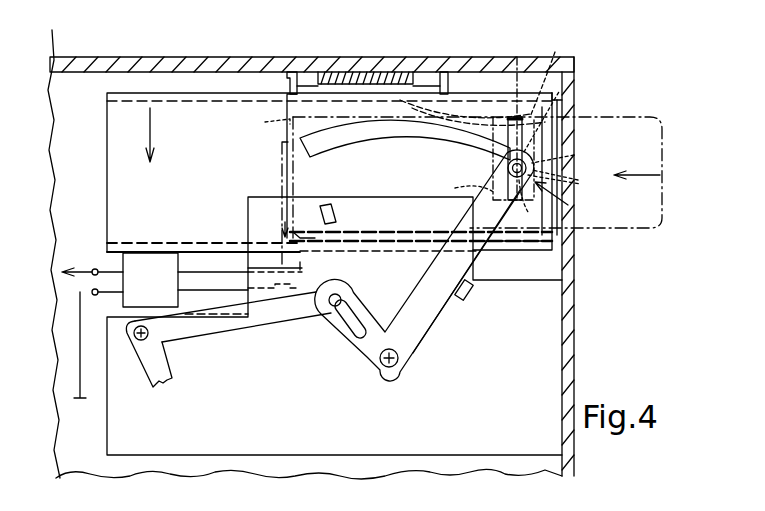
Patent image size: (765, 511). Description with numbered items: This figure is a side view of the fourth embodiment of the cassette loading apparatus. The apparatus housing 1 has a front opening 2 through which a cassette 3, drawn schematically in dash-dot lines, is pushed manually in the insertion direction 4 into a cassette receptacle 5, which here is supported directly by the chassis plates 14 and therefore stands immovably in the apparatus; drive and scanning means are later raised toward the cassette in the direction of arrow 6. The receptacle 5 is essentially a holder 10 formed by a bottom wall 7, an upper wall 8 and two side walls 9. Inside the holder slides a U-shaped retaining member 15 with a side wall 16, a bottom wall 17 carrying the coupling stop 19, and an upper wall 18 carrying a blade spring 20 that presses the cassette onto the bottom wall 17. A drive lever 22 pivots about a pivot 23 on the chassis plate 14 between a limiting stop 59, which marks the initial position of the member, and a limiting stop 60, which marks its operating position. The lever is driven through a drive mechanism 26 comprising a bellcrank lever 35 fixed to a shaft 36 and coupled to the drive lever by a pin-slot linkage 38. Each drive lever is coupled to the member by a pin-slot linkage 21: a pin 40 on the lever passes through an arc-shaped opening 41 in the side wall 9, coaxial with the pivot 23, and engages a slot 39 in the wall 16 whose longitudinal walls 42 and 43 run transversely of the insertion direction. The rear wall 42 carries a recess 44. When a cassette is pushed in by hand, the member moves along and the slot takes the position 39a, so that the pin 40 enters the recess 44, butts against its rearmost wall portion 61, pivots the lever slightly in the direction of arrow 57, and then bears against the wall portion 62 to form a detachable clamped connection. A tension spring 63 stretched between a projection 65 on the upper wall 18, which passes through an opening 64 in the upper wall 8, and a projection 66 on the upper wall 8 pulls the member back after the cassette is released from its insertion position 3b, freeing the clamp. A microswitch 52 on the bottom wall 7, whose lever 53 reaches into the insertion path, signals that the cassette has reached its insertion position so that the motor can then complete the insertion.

The apparatus housing 1 is at (104, 62).
The front opening 2 is at (566, 78).
The cassette 3 is at (648, 230).
The insertion position 3b is at (280, 170).
The insertion direction 4 is at (645, 173).
The cassette receptacle 5 is at (523, 258).
The arrow 6 is at (150, 133).
The bottom wall 7 is at (118, 248).
The upper wall 8 is at (118, 96).
The side wall 9 is at (108, 126).
The holder 10 is at (107, 168).
The chassis plate 14 is at (120, 428).
The retaining member 15 is at (548, 115).
The side wall 16 is at (266, 123).
The bottom wall 17 is at (418, 232).
The upper wall 18 is at (487, 117).
The coupling stop 19 is at (285, 214).
The blade spring 20 is at (512, 113).
The pin-slot linkage 21 is at (567, 198).
The drive lever 22 is at (423, 283).
The pivot 23 is at (388, 372).
The drive mechanism 26 is at (184, 392).
The bellcrank lever 35 is at (268, 317).
The shaft 36 is at (134, 340).
The pin-slot linkage 38 is at (347, 331).
The slot 39 is at (533, 203).
The slot position 39a is at (460, 185).
The pin 40 is at (510, 168).
The opening 41 is at (322, 150).
The rear longitudinal wall 42 is at (547, 137).
The front longitudinal wall 43 is at (513, 117).
The recess 44 is at (563, 177).
The microswitch 52 is at (148, 262).
The lever 53 is at (306, 262).
The arrow 57 is at (426, 305).
The limiting stop 59 is at (472, 293).
The limiting stop 60 is at (336, 211).
The rearmost wall portion 61 is at (560, 126).
The wall portion 62 is at (527, 158).
The tension spring 63 is at (370, 72).
The opening 64 is at (299, 74).
The projection 65 is at (287, 76).
The projection 66 is at (440, 78).